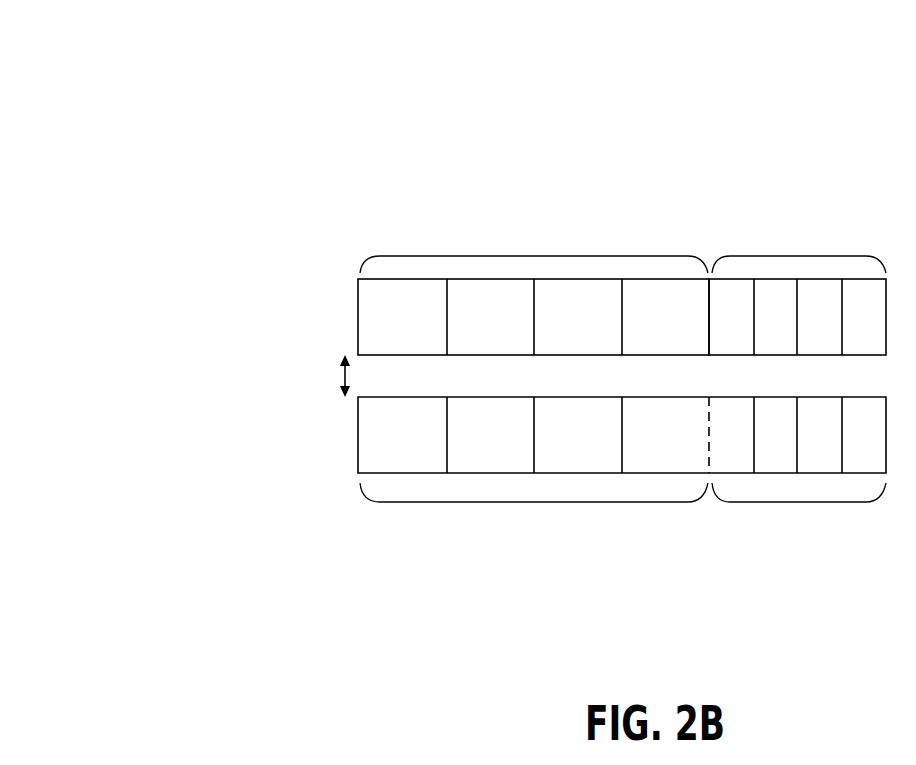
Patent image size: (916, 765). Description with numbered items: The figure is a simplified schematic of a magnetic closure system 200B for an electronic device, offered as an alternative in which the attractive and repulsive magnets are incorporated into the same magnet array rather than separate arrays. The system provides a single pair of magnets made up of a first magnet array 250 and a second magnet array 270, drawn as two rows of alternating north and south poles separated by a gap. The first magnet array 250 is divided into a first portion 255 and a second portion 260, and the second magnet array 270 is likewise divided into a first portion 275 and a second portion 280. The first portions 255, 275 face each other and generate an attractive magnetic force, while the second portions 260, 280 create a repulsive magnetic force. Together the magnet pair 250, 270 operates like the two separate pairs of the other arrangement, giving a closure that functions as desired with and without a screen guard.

The magnetic closure system 200B is at (184, 62).
The first magnet array 250 is at (338, 207).
The first portion 255 is at (478, 256).
The second portion 260 is at (818, 256).
The second magnet array 270 is at (380, 552).
The first portion 275 is at (503, 502).
The second portion 280 is at (817, 502).